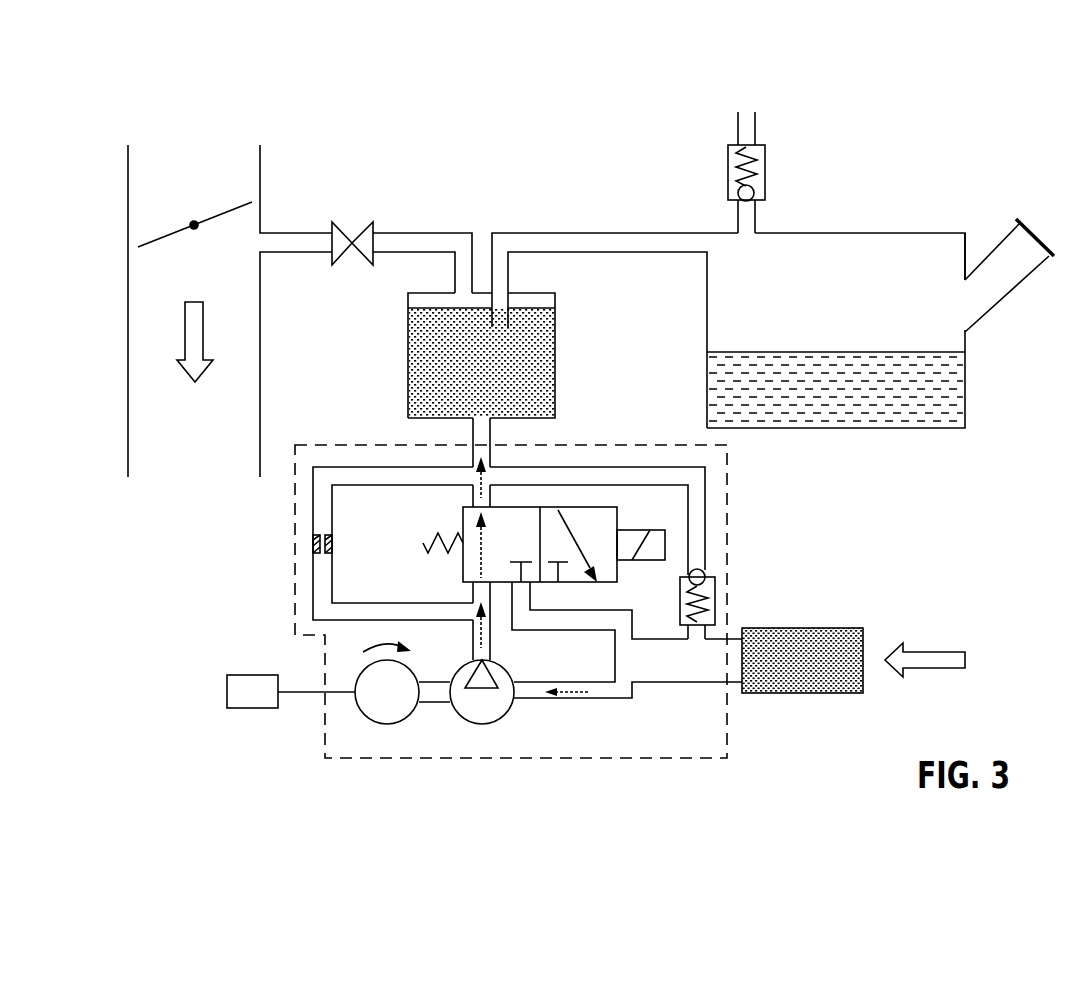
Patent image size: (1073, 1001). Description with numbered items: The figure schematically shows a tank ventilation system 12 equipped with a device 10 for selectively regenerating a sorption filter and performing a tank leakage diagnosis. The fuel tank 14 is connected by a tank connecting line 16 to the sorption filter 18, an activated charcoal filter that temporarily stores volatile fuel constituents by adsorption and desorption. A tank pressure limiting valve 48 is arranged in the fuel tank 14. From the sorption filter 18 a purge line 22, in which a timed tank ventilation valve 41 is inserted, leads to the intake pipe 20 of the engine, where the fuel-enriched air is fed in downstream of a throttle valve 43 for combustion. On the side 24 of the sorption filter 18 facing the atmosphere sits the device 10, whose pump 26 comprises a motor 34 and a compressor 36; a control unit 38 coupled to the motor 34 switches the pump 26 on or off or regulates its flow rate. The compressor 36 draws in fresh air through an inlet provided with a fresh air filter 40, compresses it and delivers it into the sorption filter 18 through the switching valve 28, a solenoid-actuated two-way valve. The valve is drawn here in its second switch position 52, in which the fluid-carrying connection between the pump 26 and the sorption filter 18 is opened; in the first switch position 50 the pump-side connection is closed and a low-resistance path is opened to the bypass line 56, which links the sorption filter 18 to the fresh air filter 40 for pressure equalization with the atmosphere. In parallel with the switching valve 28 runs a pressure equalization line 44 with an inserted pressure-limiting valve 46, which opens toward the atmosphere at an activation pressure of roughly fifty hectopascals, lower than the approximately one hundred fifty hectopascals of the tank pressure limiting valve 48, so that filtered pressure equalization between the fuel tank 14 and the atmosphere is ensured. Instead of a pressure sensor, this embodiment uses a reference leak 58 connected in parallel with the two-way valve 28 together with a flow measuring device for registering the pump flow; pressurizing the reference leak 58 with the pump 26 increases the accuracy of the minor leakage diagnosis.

The device 10 is at (262, 612).
The tank ventilation system 12 is at (904, 81).
The fuel tank 14 is at (927, 313).
The tank connecting line 16 is at (578, 244).
The sorption filter 18 is at (525, 360).
The intake pipe 20 is at (157, 327).
The purge line 22 is at (293, 247).
The side facing the atmosphere 24 is at (414, 402).
The pump 26 is at (522, 728).
The switching valve 28 is at (640, 514).
The motor 34 is at (385, 704).
The compressor 36 is at (480, 711).
The control unit 38 is at (255, 694).
The fresh air filter 40 is at (812, 652).
The tank ventilation valve 41 is at (358, 238).
The throttle valve 43 is at (162, 236).
The pressure equalization line 44 is at (697, 539).
The pressure-limiting valve 46 is at (707, 602).
The tank pressure limiting valve 48 is at (728, 167).
The first switch position 50 is at (610, 537).
The second switch position 52 is at (508, 537).
The bypass line 56 is at (567, 620).
The reference leak 58 is at (313, 545).